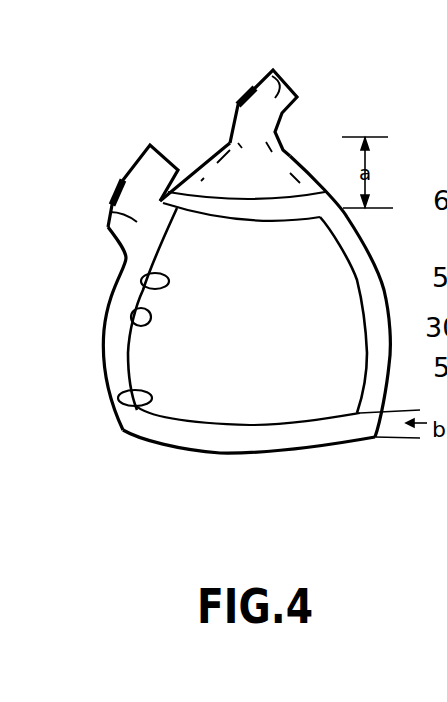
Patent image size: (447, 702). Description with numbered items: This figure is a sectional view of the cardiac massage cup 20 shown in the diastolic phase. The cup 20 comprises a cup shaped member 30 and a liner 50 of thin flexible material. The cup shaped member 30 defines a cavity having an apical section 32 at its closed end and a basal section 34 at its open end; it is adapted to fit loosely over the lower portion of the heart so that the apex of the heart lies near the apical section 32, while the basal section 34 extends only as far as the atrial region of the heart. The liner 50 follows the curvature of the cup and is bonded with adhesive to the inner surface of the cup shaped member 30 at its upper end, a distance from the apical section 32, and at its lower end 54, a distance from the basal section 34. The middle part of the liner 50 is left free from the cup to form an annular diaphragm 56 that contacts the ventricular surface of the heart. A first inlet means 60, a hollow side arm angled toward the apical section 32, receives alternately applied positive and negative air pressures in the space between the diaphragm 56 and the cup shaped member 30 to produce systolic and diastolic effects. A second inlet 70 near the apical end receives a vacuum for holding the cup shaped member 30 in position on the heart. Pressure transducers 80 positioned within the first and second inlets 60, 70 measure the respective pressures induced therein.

The cardiac massage cup 20 is at (247, 351).
The cup shaped member 30 is at (106, 350).
The apical section 32 is at (193, 170).
The basal section 34 is at (163, 440).
The liner 50 is at (143, 277).
The lower end of the liner 54 is at (118, 396).
The annular diaphragm 56 is at (133, 313).
The first inlet means 60 is at (110, 213).
The second inlet 70 is at (285, 76).
The pressure transducers 80 is at (245, 86).